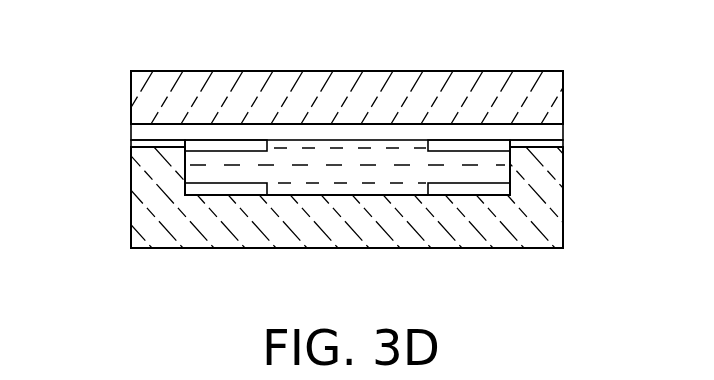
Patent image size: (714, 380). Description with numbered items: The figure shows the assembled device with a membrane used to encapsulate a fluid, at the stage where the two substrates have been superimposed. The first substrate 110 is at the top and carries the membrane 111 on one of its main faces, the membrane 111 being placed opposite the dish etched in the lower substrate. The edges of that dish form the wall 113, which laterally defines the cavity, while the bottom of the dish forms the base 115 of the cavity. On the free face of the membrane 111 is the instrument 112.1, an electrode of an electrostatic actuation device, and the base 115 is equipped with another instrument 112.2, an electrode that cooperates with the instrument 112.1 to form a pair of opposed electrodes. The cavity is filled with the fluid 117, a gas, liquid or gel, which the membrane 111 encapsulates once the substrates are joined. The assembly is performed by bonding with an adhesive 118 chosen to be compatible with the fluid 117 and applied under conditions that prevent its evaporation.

The first substrate 110 is at (548, 90).
The membrane 111 is at (150, 131).
The adhesive 118 is at (145, 147).
The wall 113 is at (548, 160).
The base 115 is at (318, 195).
The instrument 112.1 is at (468, 147).
The instrument 112.2 is at (467, 188).
The fluid 117 is at (363, 168).